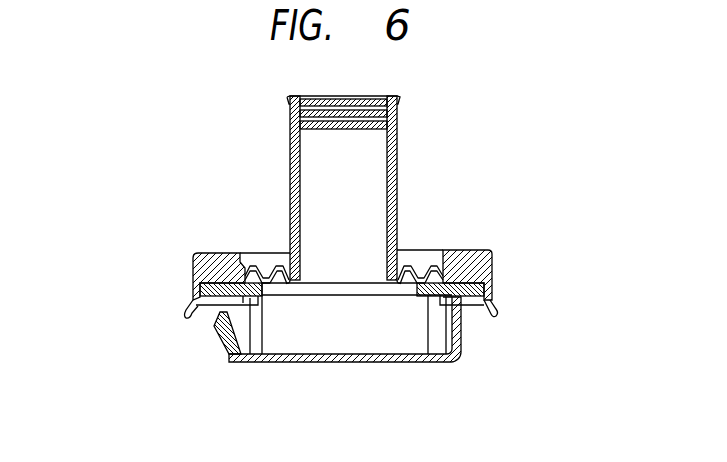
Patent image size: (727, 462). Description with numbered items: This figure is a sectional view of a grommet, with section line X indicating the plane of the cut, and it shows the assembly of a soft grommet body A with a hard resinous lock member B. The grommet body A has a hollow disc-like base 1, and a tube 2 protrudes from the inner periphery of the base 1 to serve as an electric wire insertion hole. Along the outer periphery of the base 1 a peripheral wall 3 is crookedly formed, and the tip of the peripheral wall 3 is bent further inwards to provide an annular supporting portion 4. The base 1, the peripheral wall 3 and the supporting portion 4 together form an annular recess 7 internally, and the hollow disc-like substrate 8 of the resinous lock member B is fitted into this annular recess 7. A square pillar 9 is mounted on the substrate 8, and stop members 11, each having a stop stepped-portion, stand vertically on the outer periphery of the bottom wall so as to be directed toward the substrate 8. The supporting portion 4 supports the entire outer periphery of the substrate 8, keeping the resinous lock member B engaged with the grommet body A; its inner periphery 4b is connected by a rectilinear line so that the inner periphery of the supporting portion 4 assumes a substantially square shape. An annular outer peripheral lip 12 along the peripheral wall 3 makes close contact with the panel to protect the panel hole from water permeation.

The base 1 is at (455, 250).
The tube 2 is at (396, 152).
The peripheral wall 3 is at (492, 290).
The supporting portion 4 is at (220, 303).
The inner periphery 4b is at (262, 298).
The annular recess 7 is at (462, 300).
The substrate 8 is at (463, 290).
The square pillar 9 is at (462, 335).
The stop member 11 is at (220, 345).
The annular outer peripheral lip 12 is at (188, 313).
The grommet body A is at (287, 232).
The resinous lock member B is at (447, 362).
The section line X is at (368, 308).